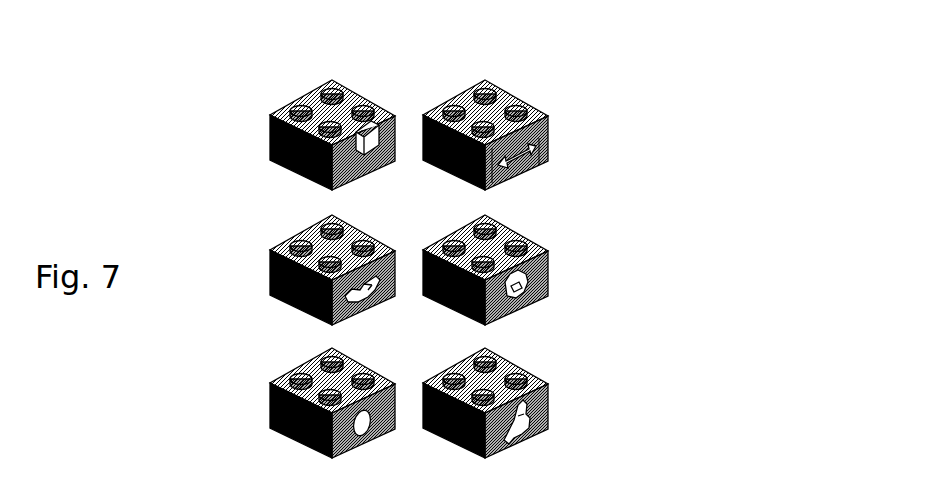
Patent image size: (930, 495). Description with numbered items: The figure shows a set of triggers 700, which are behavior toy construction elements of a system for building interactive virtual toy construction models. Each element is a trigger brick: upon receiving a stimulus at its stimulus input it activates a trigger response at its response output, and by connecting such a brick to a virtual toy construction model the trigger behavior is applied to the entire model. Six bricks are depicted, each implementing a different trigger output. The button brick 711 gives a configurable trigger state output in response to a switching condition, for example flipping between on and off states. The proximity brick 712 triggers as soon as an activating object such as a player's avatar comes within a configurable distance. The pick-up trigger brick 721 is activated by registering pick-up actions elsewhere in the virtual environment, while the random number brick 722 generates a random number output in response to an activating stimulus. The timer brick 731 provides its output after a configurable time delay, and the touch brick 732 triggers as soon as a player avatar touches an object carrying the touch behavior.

The triggers 700 is at (345, 42).
The button brick 711 is at (271, 150).
The proximity brick 712 is at (540, 158).
The pick-up trigger brick 721 is at (298, 288).
The random number brick 722 is at (508, 290).
The timer brick 731 is at (272, 415).
The touch brick 732 is at (530, 420).